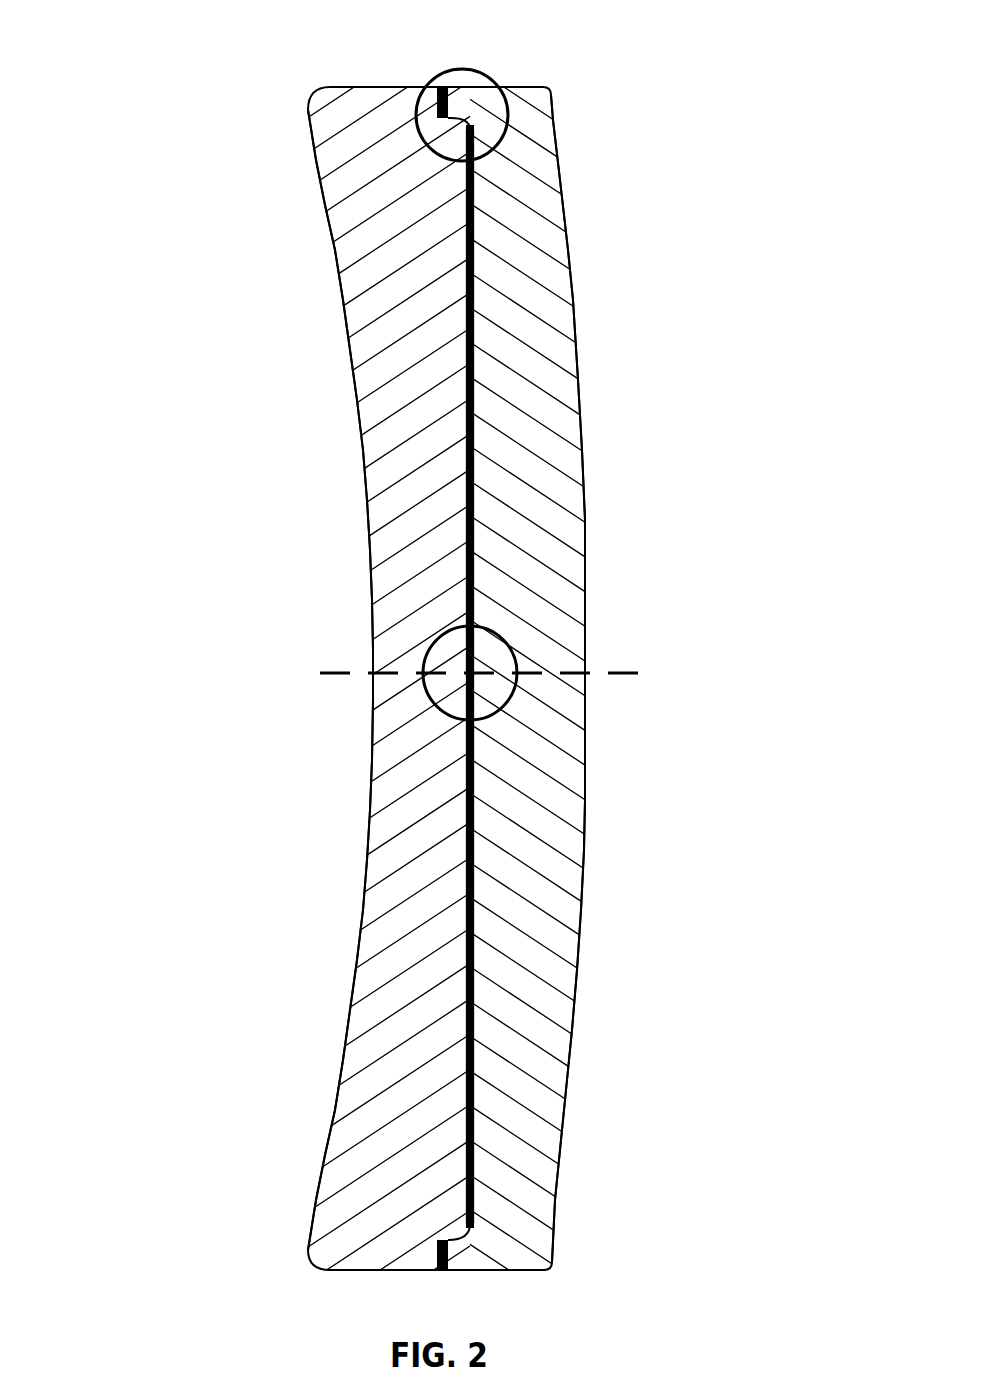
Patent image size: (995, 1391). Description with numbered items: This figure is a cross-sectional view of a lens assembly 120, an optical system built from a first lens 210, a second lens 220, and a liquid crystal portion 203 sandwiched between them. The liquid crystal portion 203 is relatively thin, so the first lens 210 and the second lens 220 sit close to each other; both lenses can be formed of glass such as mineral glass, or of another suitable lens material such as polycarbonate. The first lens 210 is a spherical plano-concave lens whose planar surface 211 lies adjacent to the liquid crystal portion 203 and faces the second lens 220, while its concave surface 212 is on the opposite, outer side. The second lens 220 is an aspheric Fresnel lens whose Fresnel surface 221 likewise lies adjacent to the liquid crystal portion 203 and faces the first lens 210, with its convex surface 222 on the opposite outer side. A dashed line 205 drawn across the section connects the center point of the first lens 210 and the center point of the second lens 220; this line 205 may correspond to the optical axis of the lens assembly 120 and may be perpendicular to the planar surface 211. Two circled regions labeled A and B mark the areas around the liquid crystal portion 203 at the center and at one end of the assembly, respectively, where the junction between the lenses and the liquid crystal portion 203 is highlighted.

The lens assembly 120 is at (145, 80).
The first lens 210 is at (400, 492).
The planar surface 211 is at (465, 411).
The concave surface 212 is at (350, 853).
The second lens 220 is at (532, 297).
The Fresnel surface 221 is at (476, 257).
The convex surface 222 is at (589, 867).
The liquid crystal portion 203 is at (482, 458).
The line 205 is at (588, 673).
The detail region A is at (517, 650).
The detail region B is at (493, 82).